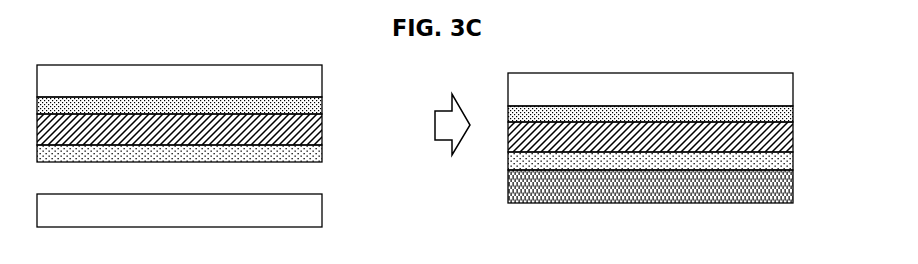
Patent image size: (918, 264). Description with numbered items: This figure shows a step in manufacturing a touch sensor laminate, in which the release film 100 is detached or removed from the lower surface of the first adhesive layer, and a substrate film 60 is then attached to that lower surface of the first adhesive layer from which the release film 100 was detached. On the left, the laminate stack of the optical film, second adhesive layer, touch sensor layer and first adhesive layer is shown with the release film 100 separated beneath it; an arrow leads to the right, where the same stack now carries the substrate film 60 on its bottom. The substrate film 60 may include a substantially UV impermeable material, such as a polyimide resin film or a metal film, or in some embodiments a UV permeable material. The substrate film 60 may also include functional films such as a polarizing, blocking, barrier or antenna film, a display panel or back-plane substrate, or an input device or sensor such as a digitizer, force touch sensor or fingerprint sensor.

The release film 100 is at (323, 212).
The substrate film 60 is at (794, 187).